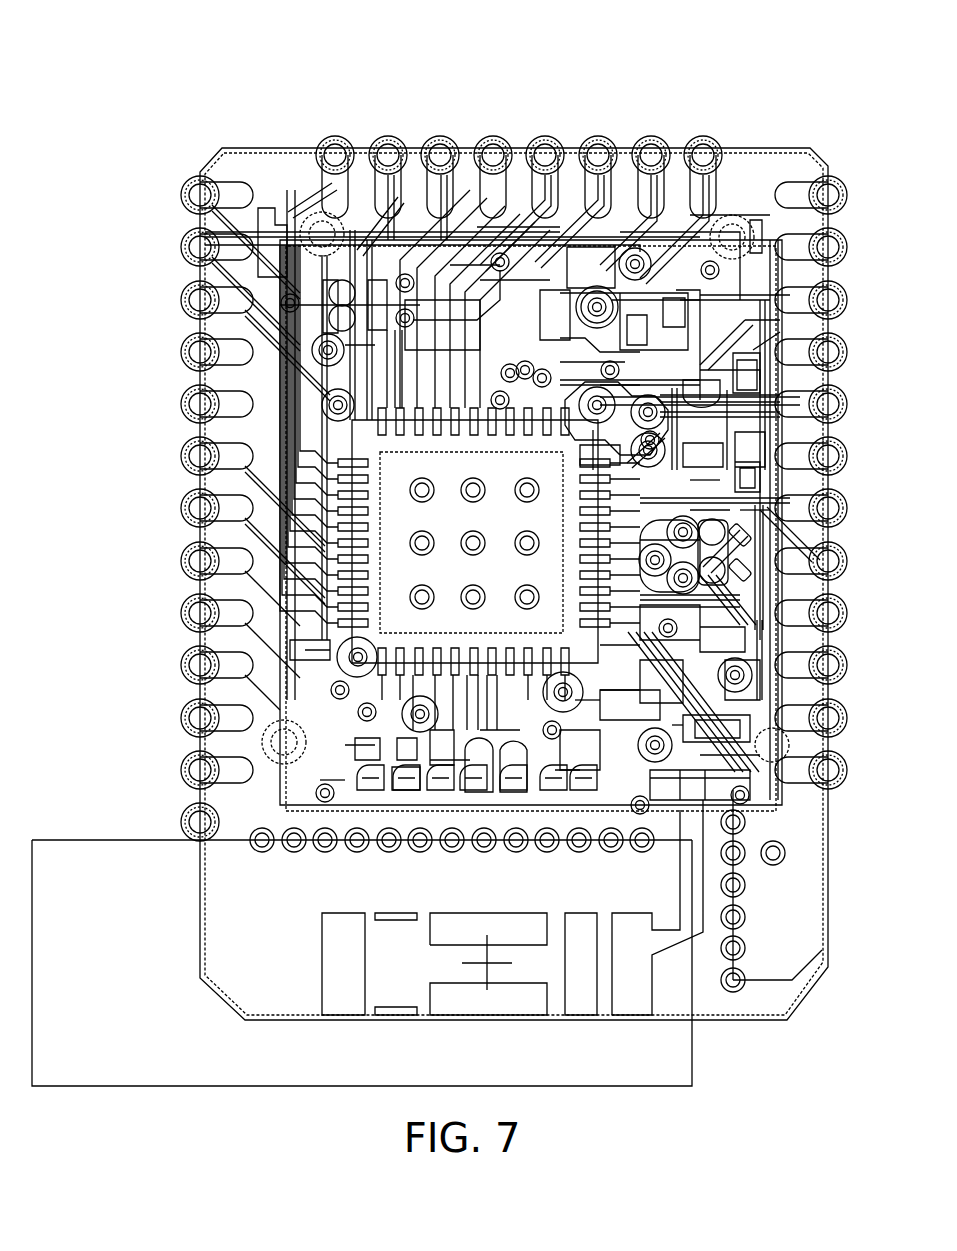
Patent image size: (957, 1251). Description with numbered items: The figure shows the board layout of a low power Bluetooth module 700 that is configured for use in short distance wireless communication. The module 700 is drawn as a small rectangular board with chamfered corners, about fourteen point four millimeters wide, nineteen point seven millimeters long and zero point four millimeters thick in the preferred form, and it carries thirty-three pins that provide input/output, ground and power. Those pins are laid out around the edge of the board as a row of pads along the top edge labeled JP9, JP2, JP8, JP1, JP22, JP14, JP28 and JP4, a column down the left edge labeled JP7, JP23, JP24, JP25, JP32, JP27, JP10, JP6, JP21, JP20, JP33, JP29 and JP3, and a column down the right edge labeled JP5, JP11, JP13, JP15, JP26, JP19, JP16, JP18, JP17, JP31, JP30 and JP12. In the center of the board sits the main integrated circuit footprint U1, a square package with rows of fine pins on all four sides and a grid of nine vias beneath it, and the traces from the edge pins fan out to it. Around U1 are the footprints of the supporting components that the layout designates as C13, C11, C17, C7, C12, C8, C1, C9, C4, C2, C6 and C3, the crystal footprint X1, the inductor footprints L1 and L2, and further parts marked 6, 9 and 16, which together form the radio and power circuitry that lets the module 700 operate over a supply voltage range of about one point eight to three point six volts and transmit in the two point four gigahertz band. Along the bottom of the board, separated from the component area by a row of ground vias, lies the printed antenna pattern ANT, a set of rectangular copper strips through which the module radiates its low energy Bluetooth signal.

The low power Bluetooth module 700 is at (808, 85).
The connection pad JP9 is at (335, 161).
The connection pad JP2 is at (388, 161).
The connection pad JP8 is at (440, 161).
The connection pad JP1 is at (493, 161).
The connection pad JP22 is at (545, 155).
The connection pad JP14 is at (598, 155).
The connection pad JP28 is at (651, 155).
The connection pad JP4 is at (703, 161).
The connection pad JP7 is at (200, 195).
The connection pad JP23 is at (195, 247).
The connection pad JP24 is at (195, 300).
The connection pad JP25 is at (195, 352).
The connection pad JP32 is at (195, 404).
The connection pad JP27 is at (195, 456).
The connection pad JP10 is at (195, 508).
The connection pad JP6 is at (200, 561).
The connection pad JP21 is at (195, 613).
The connection pad JP20 is at (195, 665).
The connection pad JP33 is at (195, 718).
The connection pad JP29 is at (195, 770).
The connection pad JP3 is at (183, 822).
The connection pad JP5 is at (826, 195).
The connection pad JP11 is at (832, 247).
The connection pad JP13 is at (832, 300).
The connection pad JP15 is at (832, 352).
The connection pad JP26 is at (832, 404).
The connection pad JP19 is at (832, 456).
The connection pad JP16 is at (832, 508).
The connection pad JP18 is at (832, 561).
The connection pad JP17 is at (832, 613).
The connection pad JP31 is at (832, 665).
The connection pad JP30 is at (832, 718).
The connection pad JP12 is at (832, 770).
The integrated circuit U1 is at (460, 487).
The trace 6 is at (712, 215).
The trace 9 is at (467, 257).
The capacitor C13 is at (604, 314).
The capacitor C11 is at (346, 546).
The capacitor C17 is at (705, 305).
The capacitor C7 is at (632, 375).
The capacitor C12 is at (708, 481).
The capacitor C8 is at (710, 511).
The capacitor C1 is at (755, 511).
The crystal oscillator X1 is at (620, 653).
The capacitor C9 is at (620, 681).
The capacitor C4 is at (436, 700).
The inductor L1 is at (500, 719).
The inductor L2 is at (450, 751).
The trace 16 is at (585, 714).
The capacitor C2 is at (666, 726).
The capacitor C6 is at (730, 753).
The capacitor C3 is at (333, 770).
The antenna ANT is at (512, 907).